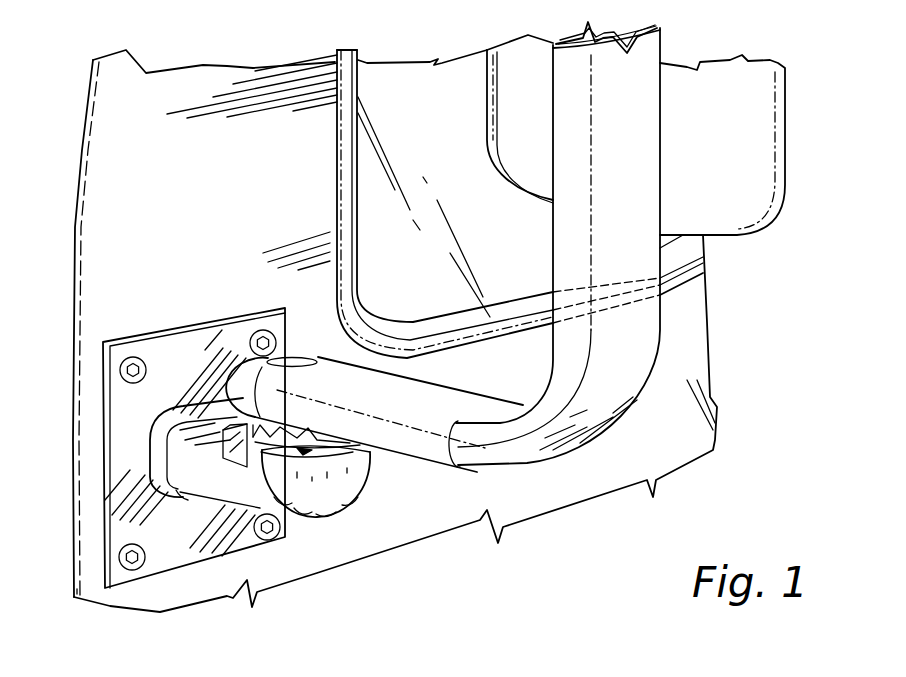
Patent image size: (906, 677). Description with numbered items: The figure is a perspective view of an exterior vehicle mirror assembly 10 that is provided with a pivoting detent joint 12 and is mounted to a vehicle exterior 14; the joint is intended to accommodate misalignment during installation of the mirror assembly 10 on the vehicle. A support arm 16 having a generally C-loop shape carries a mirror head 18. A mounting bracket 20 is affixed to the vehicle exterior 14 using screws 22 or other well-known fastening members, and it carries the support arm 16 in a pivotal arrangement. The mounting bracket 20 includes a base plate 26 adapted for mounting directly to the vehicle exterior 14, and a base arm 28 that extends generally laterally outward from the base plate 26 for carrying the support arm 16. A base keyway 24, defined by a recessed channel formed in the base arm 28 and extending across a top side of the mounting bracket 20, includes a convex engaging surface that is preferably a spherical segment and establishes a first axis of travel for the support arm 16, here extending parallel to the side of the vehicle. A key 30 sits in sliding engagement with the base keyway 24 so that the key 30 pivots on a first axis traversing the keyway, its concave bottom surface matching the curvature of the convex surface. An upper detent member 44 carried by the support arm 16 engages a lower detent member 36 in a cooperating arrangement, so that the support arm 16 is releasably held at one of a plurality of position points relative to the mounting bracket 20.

The exterior vehicle mirror assembly 10 is at (798, 105).
The pivoting detent joint 12 is at (380, 456).
The vehicle exterior 14 is at (96, 166).
The support arm 16 is at (633, 371).
The mirror head 18 is at (710, 72).
The mounting bracket 20 is at (182, 513).
The screws 22 is at (126, 358).
The base keyway 24 is at (262, 470).
The base plate 26 is at (198, 340).
The base arm 28 is at (344, 495).
The key 30 is at (345, 470).
The lower detent member 36 is at (250, 478).
The upper detent member 44 is at (283, 425).